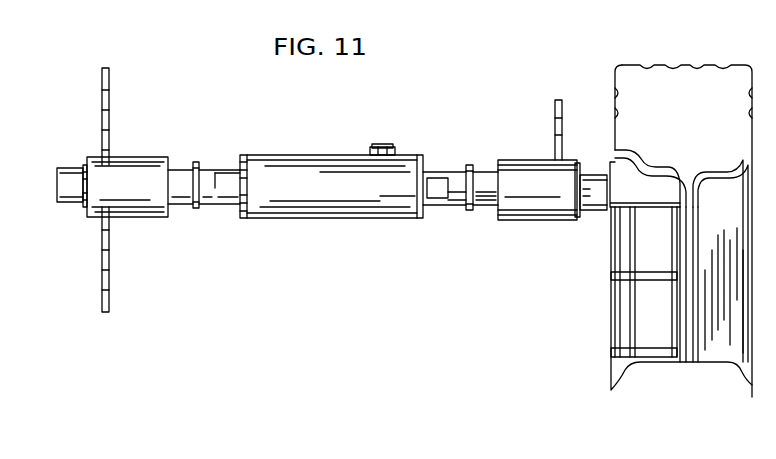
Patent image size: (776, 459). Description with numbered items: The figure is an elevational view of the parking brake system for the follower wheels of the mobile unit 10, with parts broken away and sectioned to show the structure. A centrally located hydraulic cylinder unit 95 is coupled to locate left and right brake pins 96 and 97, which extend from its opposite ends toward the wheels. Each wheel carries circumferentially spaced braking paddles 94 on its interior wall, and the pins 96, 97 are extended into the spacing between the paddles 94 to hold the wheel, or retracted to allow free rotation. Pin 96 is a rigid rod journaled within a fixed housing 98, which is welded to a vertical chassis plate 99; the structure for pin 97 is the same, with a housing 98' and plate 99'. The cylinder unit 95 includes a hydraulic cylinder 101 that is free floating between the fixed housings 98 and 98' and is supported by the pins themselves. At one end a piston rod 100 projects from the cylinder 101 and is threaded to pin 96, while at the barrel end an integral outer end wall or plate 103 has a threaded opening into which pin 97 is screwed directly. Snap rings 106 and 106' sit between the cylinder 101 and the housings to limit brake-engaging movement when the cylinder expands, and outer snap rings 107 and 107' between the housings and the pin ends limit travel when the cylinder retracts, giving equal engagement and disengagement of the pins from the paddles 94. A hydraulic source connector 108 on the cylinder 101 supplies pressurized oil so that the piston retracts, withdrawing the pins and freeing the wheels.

The frame structure 10 is at (630, 383).
The braking paddles 94 is at (680, 196).
The hydraulic cylinder unit 95 is at (347, 201).
The brake pin 96 is at (485, 206).
The brake pin 97 is at (182, 205).
The fixed housing 98 is at (539, 165).
The fixed housing 98' is at (142, 166).
The vertical chassis plate 99 is at (527, 105).
The vertical chassis plate 99' is at (138, 190).
The piston rod 100 is at (435, 190).
The hydraulic cylinder 101 is at (405, 208).
The outer end wall or plate 103 is at (230, 207).
The snap ring 106 is at (442, 151).
The snap ring 106' is at (250, 160).
The snap ring 107 is at (589, 130).
The snap ring 107' is at (57, 159).
The hydraulic source connector 108 is at (385, 146).